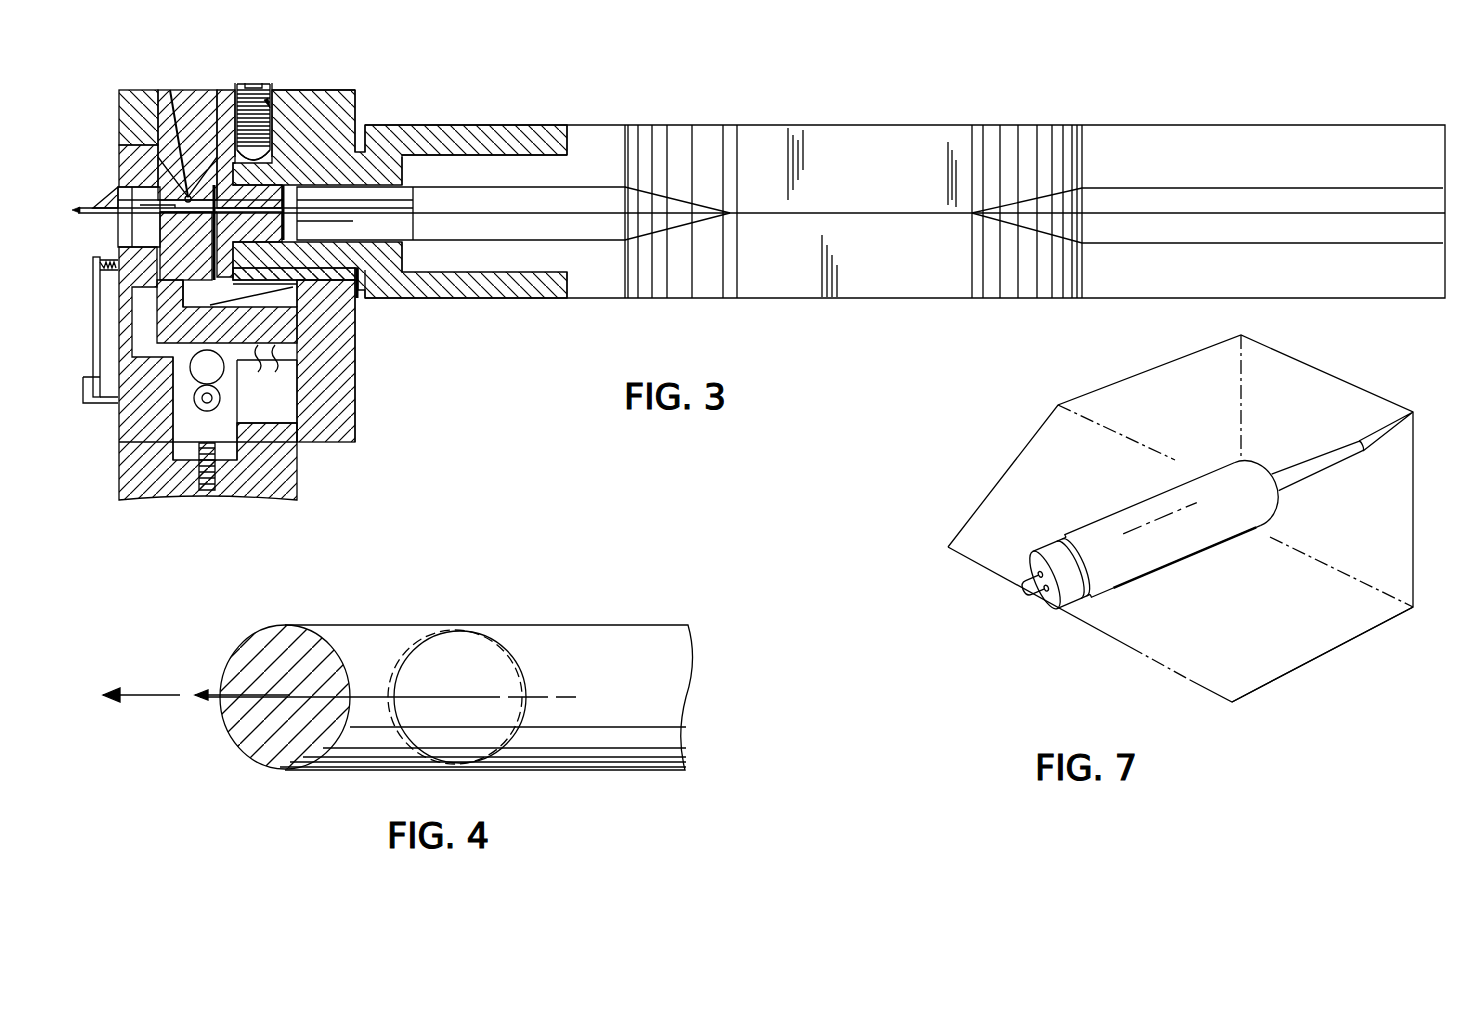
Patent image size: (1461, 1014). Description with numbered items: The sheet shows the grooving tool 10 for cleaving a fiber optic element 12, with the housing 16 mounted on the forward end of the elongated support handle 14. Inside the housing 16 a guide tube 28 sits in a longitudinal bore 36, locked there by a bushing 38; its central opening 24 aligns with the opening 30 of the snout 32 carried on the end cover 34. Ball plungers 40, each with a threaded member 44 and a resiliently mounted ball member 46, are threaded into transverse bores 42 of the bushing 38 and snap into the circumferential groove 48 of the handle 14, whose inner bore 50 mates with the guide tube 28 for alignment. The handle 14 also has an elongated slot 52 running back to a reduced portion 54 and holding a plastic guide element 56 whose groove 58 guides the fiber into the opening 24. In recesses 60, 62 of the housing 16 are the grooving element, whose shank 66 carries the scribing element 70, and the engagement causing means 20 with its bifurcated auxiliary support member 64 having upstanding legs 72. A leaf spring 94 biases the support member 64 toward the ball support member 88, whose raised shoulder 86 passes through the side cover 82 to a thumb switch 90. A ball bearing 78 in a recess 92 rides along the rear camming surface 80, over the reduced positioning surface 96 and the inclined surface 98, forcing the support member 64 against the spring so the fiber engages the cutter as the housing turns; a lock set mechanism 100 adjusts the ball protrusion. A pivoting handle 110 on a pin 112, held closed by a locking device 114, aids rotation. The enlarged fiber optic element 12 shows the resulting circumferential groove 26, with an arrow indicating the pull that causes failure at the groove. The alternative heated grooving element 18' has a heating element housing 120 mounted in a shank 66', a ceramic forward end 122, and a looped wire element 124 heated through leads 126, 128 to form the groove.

In FIG. 3, the grooving tool 10 is at (580, 307).
In FIG. 3, the fiber optic element 12 is at (1263, 215).
In FIG. 4, the fiber optic element 12 is at (556, 618).
In FIG. 3, the elongated support handle 14 is at (708, 303).
In FIG. 3, the housing 16 is at (360, 340).
In FIG. 3, the engagement causing means 20 is at (160, 320).
In FIG. 3, the central longitudinally extending opening 24 is at (283, 228).
In FIG. 4, the circumferential groove 26 is at (495, 627).
In FIG. 3, the guide tube 28 is at (340, 153).
In FIG. 3, the opening 30 is at (110, 208).
In FIG. 3, the end support member or snout 32 is at (105, 190).
In FIG. 3, the end cover 34 is at (118, 97).
In FIG. 3, the longitudinally extending bore 36 is at (337, 100).
In FIG. 3, the bushing 38 is at (393, 127).
In FIG. 3, the ball plungers 40 is at (250, 162).
In FIG. 3, the transversely oriented bores 42 is at (242, 98).
In FIG. 3, the threaded member 44 is at (270, 103).
In FIG. 3, the resiliently mounted ball member 46 is at (220, 153).
In FIG. 3, the circumferential groove 48 is at (277, 285).
In FIG. 3, the inner bore 50 is at (402, 167).
In FIG. 3, the elongated slot or recess 52 is at (597, 187).
In FIG. 3, the reduced portion 54 is at (878, 278).
In FIG. 3, the plastic guide element 56 is at (402, 228).
In FIG. 3, the elongated slot or groove 58 is at (412, 213).
In FIG. 3, the recess 60 is at (162, 147).
In FIG. 3, the recess 62 is at (276, 283).
In FIG. 3, the fiber optic auxiliary support member 64 is at (172, 258).
In FIG. 3, the block or shank 66 is at (178, 122).
In FIG. 3, the scribing element 70 is at (187, 200).
In FIG. 3, the upstanding legs 72 is at (170, 208).
In FIG. 3, the ball bearing 78 is at (197, 373).
In FIG. 3, the rear camming surface 80 is at (243, 350).
In FIG. 3, the side cover 82 is at (352, 387).
In FIG. 3, the raised shoulder 86 is at (178, 448).
In FIG. 3, the ball support member 88 is at (283, 415).
In FIG. 3, the thumb switch 90 is at (263, 487).
In FIG. 3, the recess 92 is at (237, 447).
In FIG. 3, the leaf spring 94 is at (227, 290).
In FIG. 3, the reduced positioning surface 96 is at (270, 347).
In FIG. 3, the inclined surface 98 is at (297, 447).
In FIG. 3, the lock set mechanism 100 is at (203, 400).
In FIG. 3, the handle 110 is at (93, 367).
In FIG. 3, the pin 112 is at (105, 427).
In FIG. 3, the locking device 114 is at (105, 277).
In FIG. 7, the heated grooving element 18' is at (1322, 661).
In FIG. 7, the shank 66' is at (1180, 517).
In FIG. 7, the heating element housing 120 is at (1130, 517).
In FIG. 7, the ceramic forward end 122 is at (1073, 607).
In FIG. 7, the looped wire element 124 is at (1023, 597).
In FIG. 7, the lead 126 is at (1410, 412).
In FIG. 7, the lead 128 is at (1397, 435).